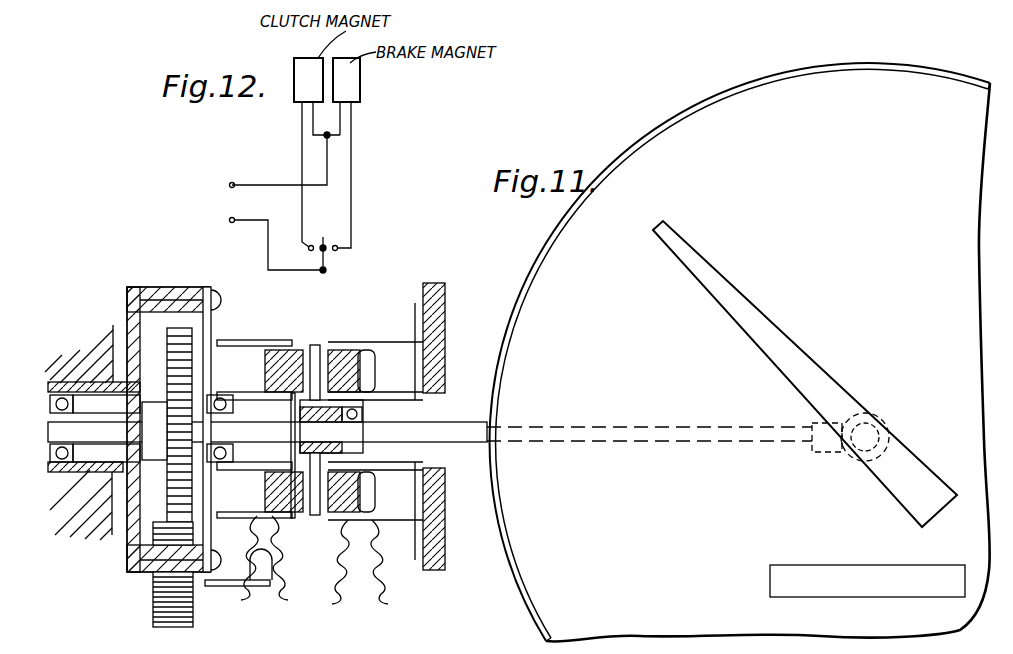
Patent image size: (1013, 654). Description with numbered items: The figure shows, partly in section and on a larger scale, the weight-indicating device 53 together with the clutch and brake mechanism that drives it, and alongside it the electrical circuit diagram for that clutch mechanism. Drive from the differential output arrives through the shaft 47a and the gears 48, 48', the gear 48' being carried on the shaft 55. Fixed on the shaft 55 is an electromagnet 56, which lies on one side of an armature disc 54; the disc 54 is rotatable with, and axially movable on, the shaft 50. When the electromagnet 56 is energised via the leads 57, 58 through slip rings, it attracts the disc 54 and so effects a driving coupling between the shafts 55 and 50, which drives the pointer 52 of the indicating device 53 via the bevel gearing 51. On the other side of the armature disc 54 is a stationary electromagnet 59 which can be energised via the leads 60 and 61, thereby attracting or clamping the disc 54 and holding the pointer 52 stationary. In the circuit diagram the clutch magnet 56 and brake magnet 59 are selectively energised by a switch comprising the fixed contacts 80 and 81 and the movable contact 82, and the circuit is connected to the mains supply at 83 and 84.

In FIG. 12, the electromagnet 56 is at (294, 80).
In FIG. 12, the stationary electromagnet 59 is at (360, 80).
In FIG. 12, the lead 57 is at (302, 124).
In FIG. 12, the lead 58 is at (312, 138).
In FIG. 12, the lead 60 is at (340, 126).
In FIG. 12, the lead 61 is at (351, 150).
In FIG. 12, the fixed contact 80 is at (308, 250).
In FIG. 12, the fixed contact 81 is at (337, 250).
In FIG. 12, the movable contact 82 is at (323, 240).
In FIG. 12, the mains supply connection 83 is at (232, 188).
In FIG. 12, the mains supply connection 84 is at (232, 223).
In FIG. 12, the shaft 50 is at (470, 425).
In FIG. 12, the shaft 55 is at (238, 425).
In FIG. 12, the armature disc 54 is at (318, 345).
In FIG. 12, the gear 48' is at (163, 425).
In FIG. 12, the gear 48 is at (147, 574).
In FIG. 12, the shaft 47a is at (272, 575).
In FIG. 11, the indicating device 53 is at (662, 126).
In FIG. 11, the pointer 52 is at (770, 318).
In FIG. 11, the bevel gearing 51 is at (824, 455).